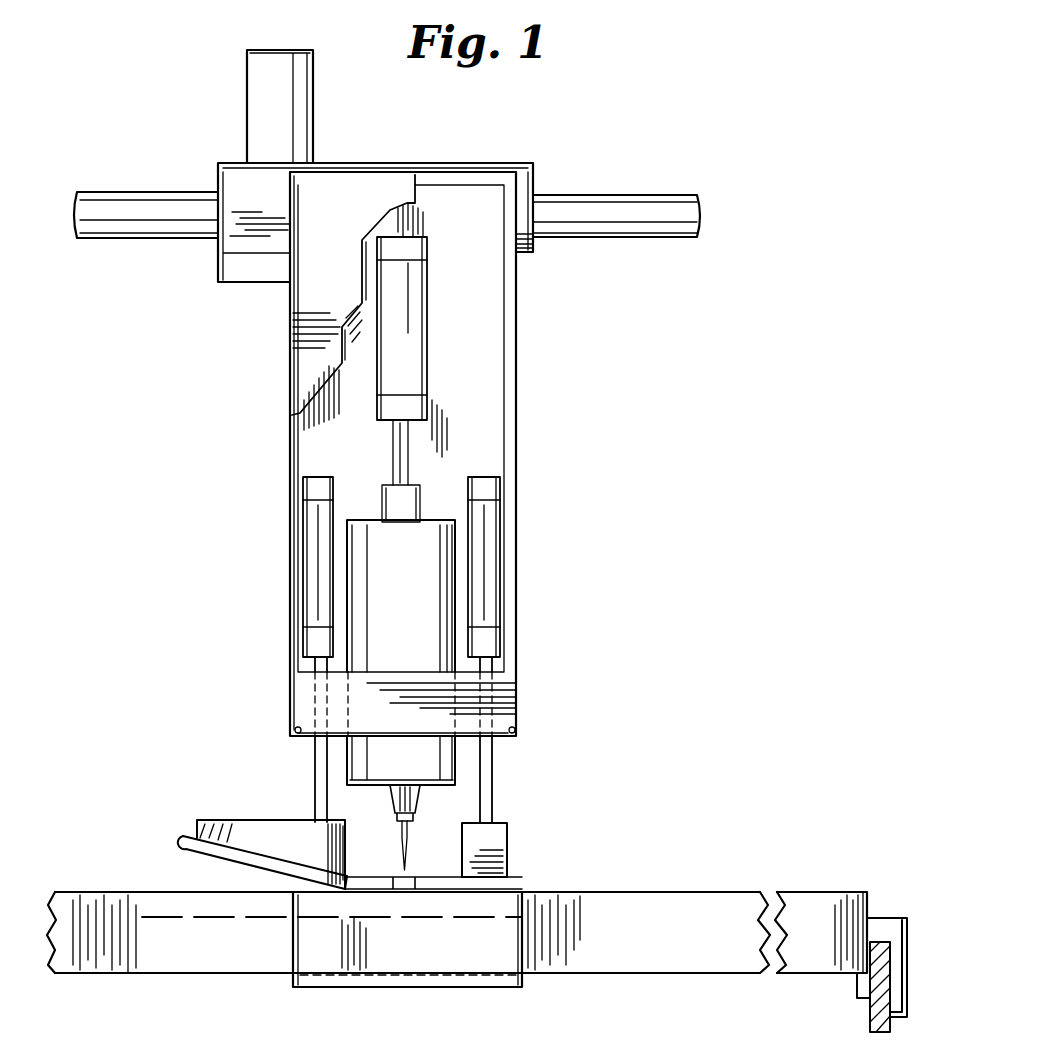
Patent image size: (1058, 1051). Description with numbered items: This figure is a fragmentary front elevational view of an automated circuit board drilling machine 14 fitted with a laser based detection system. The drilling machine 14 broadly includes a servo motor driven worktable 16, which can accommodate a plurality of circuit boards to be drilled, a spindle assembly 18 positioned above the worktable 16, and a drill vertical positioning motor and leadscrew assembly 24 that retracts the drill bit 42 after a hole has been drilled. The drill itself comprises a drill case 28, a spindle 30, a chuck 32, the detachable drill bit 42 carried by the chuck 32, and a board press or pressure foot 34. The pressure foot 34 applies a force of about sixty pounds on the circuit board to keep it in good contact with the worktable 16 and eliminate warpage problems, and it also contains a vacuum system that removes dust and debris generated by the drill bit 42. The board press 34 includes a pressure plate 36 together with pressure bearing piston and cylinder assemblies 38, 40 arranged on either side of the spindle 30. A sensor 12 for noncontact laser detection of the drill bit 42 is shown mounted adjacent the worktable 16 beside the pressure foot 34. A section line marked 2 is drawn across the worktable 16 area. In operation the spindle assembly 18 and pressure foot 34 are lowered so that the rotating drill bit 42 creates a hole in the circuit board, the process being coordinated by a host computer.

The section line 2- 2 is at (535, 917).
The sensor 12 is at (187, 856).
The drilling machine 14 is at (552, 166).
The worktable 16 is at (618, 903).
The spindle assembly 18 is at (518, 450).
The drill vertical positioning motor and leadscrew assembly 24 is at (390, 338).
The drill case 28 is at (518, 378).
The spindle 30 is at (424, 560).
The chuck 32 is at (410, 858).
The pressure foot 34 is at (247, 818).
The pressure plate 36 is at (368, 876).
The pressure bearing piston and cylinder assembly 38 is at (318, 638).
The pressure bearing piston and cylinder assembly 40 is at (483, 642).
The drill bit 42 is at (505, 824).